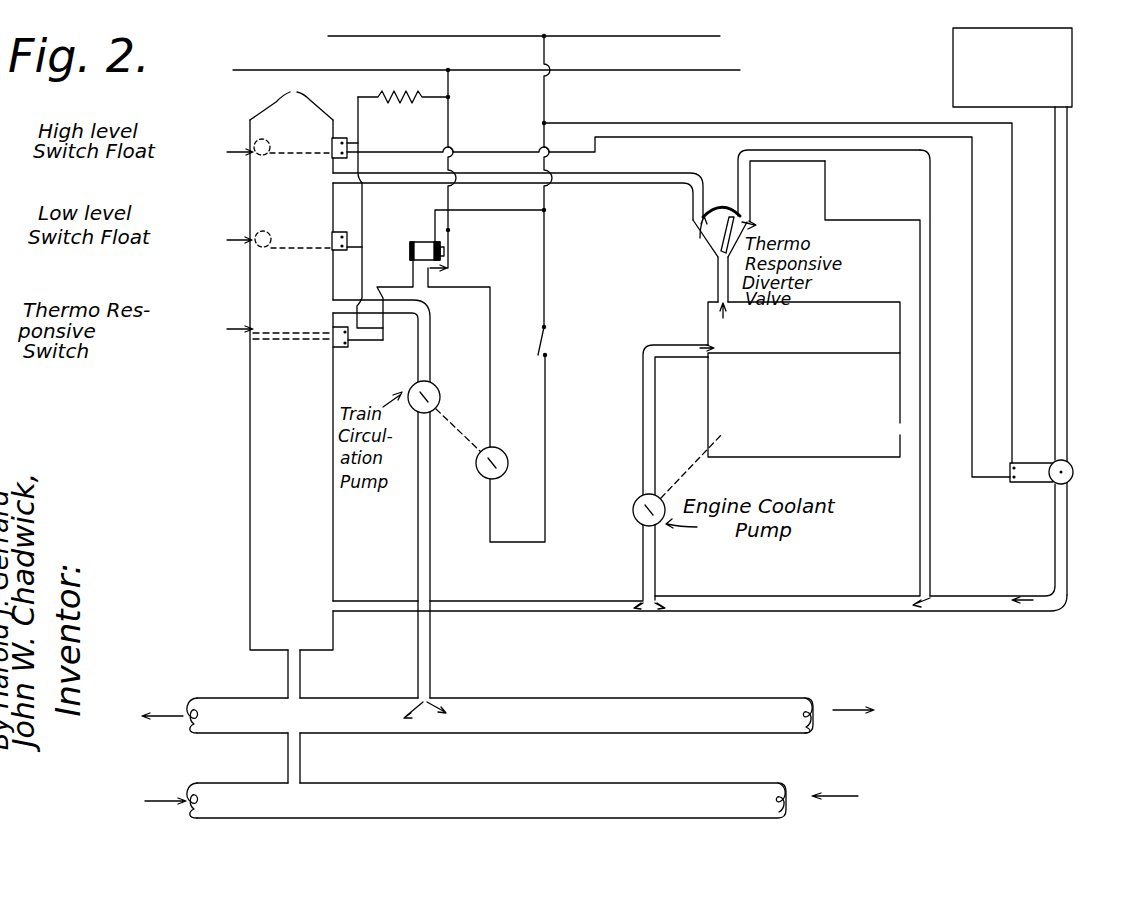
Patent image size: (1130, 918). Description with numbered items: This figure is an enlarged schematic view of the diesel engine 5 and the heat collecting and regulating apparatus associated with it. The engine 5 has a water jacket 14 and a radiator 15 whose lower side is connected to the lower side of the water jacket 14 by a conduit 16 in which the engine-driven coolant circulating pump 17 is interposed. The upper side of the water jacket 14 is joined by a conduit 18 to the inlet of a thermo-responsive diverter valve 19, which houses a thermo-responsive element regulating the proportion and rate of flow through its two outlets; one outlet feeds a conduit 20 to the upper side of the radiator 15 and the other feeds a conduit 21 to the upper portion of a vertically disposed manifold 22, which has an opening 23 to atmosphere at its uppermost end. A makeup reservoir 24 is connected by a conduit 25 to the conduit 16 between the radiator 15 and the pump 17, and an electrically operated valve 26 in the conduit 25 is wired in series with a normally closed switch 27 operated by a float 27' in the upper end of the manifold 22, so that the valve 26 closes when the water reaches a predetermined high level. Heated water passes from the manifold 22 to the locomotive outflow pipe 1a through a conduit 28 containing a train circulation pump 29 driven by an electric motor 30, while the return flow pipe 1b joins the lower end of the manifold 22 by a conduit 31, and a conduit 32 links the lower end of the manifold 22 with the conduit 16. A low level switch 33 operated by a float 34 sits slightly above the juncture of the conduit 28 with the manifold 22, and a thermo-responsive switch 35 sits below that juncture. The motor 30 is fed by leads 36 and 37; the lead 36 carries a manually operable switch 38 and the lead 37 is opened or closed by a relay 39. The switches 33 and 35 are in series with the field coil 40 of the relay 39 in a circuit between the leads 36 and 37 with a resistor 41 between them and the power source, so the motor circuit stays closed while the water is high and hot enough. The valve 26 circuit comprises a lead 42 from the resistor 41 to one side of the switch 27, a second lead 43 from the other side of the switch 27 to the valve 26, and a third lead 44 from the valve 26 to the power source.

The outflow pipe 1a is at (658, 703).
The return flow pipe 1b is at (643, 790).
The engine 5 is at (838, 446).
The water jacket 14 is at (884, 337).
The radiator 15 is at (884, 212).
The conduit 16 is at (643, 426).
The coolant circulating pump 17 is at (638, 522).
The conduit 18 is at (717, 275).
The thermo-responsive diverter valve 19 is at (703, 238).
The conduit 20 is at (749, 193).
The conduit 21 is at (638, 177).
The manifold 22 is at (252, 487).
The opening 23 is at (288, 93).
The makeup reservoir 24 is at (1072, 88).
The conduit 25 is at (1062, 328).
The electrically operated valve 26 is at (1037, 483).
The switch 27 is at (340, 124).
The float 27' is at (293, 132).
The conduit 28 is at (430, 345).
The train circulation pump 29 is at (437, 390).
The electric motor 30 is at (503, 474).
The conduit 31 is at (300, 675).
The conduit 32 is at (538, 614).
The low level switch 33 is at (340, 232).
The float 34 is at (264, 247).
The thermo-responsive switch 35 is at (338, 347).
The lead 36 is at (547, 291).
The lead 37 is at (493, 380).
The manually operable switch 38 is at (550, 338).
The relay 39 is at (429, 234).
The field coil 40 is at (408, 248).
The resistor 41 is at (407, 100).
The lead 42 is at (360, 127).
The lead 43 is at (512, 147).
The lead 44 is at (803, 107).